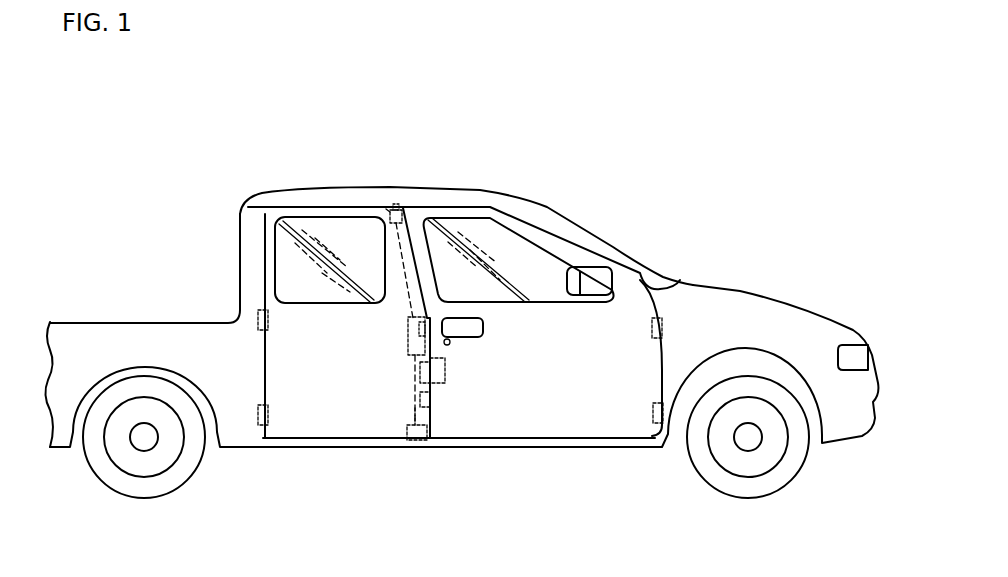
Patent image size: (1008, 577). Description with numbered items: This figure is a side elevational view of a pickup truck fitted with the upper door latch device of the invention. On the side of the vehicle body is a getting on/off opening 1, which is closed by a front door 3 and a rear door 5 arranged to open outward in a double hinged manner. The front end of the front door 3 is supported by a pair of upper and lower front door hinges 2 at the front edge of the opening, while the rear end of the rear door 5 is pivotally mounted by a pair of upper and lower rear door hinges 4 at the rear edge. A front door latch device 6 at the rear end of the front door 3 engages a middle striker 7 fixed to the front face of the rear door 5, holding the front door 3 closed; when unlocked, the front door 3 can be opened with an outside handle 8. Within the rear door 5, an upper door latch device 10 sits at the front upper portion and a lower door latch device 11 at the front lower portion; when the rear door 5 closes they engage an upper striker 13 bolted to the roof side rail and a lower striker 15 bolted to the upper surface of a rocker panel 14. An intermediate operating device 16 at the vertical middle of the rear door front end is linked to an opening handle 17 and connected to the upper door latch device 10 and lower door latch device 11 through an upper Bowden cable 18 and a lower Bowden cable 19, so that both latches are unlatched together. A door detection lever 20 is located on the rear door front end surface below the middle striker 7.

The getting on/off opening 1 is at (544, 437).
The front door hinges 2 is at (660, 410).
The front door 3 is at (595, 403).
The rear door hinges 4 is at (255, 415).
The rear door 5 is at (308, 402).
The front door latch device 6 is at (445, 372).
The middle striker 7 is at (413, 373).
The outside handle 8 is at (486, 326).
The upper door latch device 10 is at (386, 209).
The lower door latch device 11 is at (410, 427).
The upper striker 13 is at (398, 198).
The rocker panel 14 is at (468, 442).
The lower striker 15 is at (423, 440).
The intermediate operating device 16 is at (407, 330).
The opening handle 17 is at (415, 318).
The upper Bowden cable 18 is at (403, 240).
The lower Bowden cable 19 is at (420, 410).
The door detection lever 20 is at (420, 398).